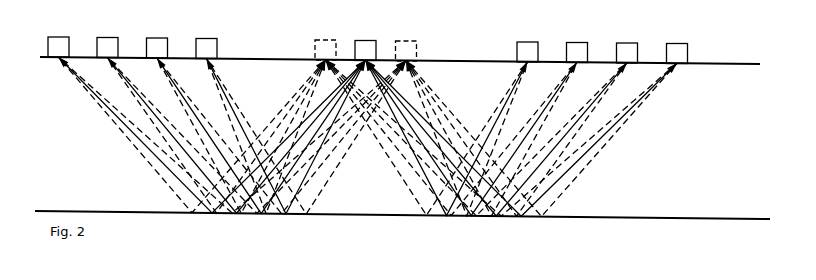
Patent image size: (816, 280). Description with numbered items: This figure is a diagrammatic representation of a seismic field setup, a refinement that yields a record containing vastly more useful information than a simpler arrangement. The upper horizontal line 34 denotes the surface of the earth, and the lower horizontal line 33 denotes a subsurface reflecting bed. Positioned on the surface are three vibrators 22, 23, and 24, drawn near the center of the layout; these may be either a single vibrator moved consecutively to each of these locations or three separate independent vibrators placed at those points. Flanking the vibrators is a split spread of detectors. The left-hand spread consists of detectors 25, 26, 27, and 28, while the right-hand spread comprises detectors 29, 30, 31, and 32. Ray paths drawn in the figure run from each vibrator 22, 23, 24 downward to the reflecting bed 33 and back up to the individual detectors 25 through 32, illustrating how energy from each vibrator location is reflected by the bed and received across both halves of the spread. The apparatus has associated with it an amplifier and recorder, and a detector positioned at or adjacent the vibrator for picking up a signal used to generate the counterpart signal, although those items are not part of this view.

The vibrator 22 is at (374, 40).
The vibrator 23 is at (333, 40).
The vibrator 24 is at (414, 41).
The detector 25 is at (66, 37).
The detector 26 is at (115, 38).
The detector 27 is at (165, 38).
The detector 28 is at (215, 38).
The detector 29 is at (536, 42).
The detector 30 is at (585, 42).
The detector 31 is at (635, 43).
The detector 32 is at (685, 44).
The subsurface reflecting bed 33 is at (64, 211).
The surface of the earth 34 is at (42, 57).